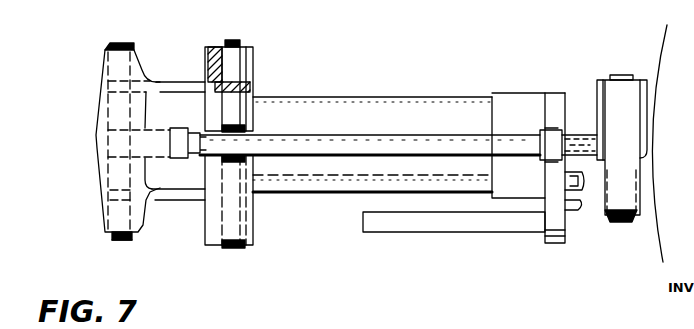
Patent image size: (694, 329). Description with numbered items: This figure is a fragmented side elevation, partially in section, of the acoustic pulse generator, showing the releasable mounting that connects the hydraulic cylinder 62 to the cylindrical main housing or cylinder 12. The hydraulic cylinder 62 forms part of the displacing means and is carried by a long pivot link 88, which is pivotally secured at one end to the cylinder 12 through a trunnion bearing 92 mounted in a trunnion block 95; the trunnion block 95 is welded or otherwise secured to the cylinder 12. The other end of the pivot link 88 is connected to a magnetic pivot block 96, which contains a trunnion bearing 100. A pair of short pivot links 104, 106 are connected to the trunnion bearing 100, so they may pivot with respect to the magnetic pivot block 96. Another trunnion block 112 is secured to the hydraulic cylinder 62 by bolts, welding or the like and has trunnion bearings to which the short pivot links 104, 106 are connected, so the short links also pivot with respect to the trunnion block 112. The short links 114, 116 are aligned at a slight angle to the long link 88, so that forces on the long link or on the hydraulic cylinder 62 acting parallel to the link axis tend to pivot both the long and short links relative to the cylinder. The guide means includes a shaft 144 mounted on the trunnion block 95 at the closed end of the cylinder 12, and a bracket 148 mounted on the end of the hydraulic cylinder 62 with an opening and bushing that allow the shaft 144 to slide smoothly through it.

The main housing or cylinder 12 is at (656, 265).
The hydraulic cylinder 62 is at (372, 100).
The pivot link 88 is at (440, 135).
The trunnion bearing 92 is at (620, 77).
The trunnion block 95 is at (598, 213).
The magnetic pivot block 96 is at (98, 133).
The trunnion bearing 100 is at (125, 240).
The short pivot link 104 is at (168, 82).
The short pivot link 106 is at (175, 200).
The trunnion block 112 is at (253, 70).
The short link 114 is at (240, 42).
The short link 116 is at (232, 248).
The shaft 144 is at (432, 232).
The bracket 148 is at (549, 244).